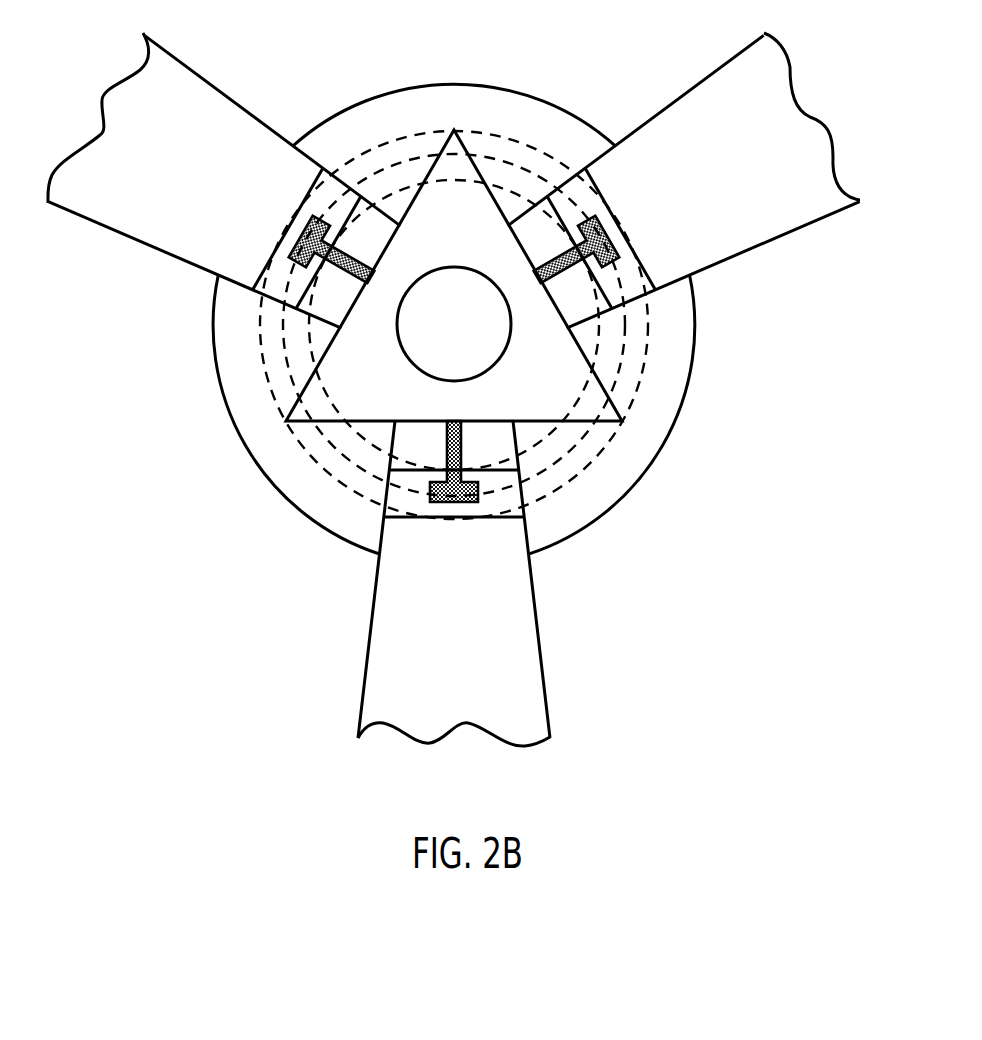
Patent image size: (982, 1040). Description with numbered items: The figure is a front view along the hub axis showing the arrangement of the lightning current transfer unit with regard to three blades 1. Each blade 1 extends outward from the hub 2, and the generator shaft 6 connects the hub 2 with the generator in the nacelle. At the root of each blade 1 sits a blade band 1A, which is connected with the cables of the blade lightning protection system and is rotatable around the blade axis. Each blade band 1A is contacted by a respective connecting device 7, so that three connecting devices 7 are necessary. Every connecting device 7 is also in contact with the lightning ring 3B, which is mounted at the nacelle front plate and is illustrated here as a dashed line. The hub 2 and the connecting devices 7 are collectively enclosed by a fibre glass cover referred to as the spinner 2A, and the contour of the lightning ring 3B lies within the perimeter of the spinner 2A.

The blade 1 is at (178, 72).
The blade band 1A is at (313, 187).
The hub 2 is at (573, 372).
The spinner 2A is at (675, 420).
The lightning ring 3B is at (583, 452).
The generator shaft 6 is at (413, 348).
The connecting device 7 is at (318, 248).